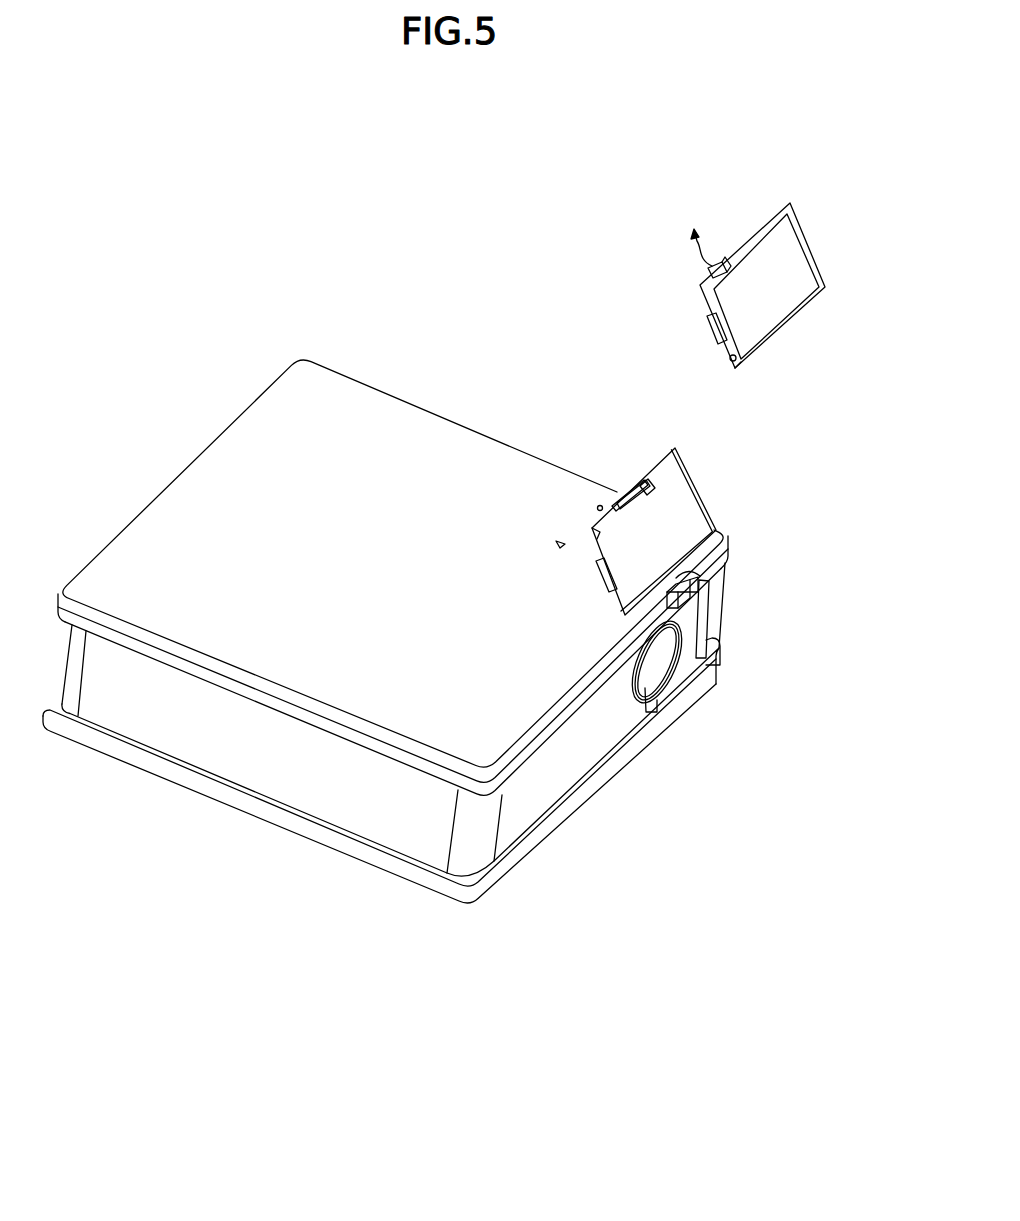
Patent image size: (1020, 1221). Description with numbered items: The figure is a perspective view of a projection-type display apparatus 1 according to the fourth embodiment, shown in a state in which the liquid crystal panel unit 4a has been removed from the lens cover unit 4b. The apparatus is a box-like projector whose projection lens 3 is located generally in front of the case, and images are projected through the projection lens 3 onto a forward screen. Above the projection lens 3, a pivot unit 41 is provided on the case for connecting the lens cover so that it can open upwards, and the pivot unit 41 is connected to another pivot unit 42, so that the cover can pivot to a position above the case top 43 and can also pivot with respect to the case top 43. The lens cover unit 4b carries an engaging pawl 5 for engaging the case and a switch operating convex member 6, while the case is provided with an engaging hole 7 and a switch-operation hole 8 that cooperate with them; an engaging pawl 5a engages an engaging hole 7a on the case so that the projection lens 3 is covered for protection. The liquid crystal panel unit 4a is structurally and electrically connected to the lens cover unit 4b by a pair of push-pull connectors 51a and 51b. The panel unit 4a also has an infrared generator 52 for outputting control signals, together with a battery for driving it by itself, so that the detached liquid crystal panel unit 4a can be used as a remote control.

The projection-type display apparatus 1 is at (385, 603).
The projection lens 3 is at (657, 665).
The liquid crystal panel unit 4a is at (704, 263).
The lens cover unit 4b is at (643, 515).
The engaging pawl 5 is at (600, 482).
The engaging pawl 5a is at (648, 490).
The switch operating convex member 6 is at (654, 488).
The engaging hole 7 is at (560, 545).
The engaging hole 7a is at (657, 702).
The switch-operation hole 8 is at (597, 505).
The pivot unit 41 is at (708, 590).
The pivot unit 42 is at (697, 572).
The case top 43 is at (379, 433).
The push-pull connector 51a is at (712, 332).
The push-pull connector 51b is at (598, 578).
The infrared generator 52 is at (711, 266).